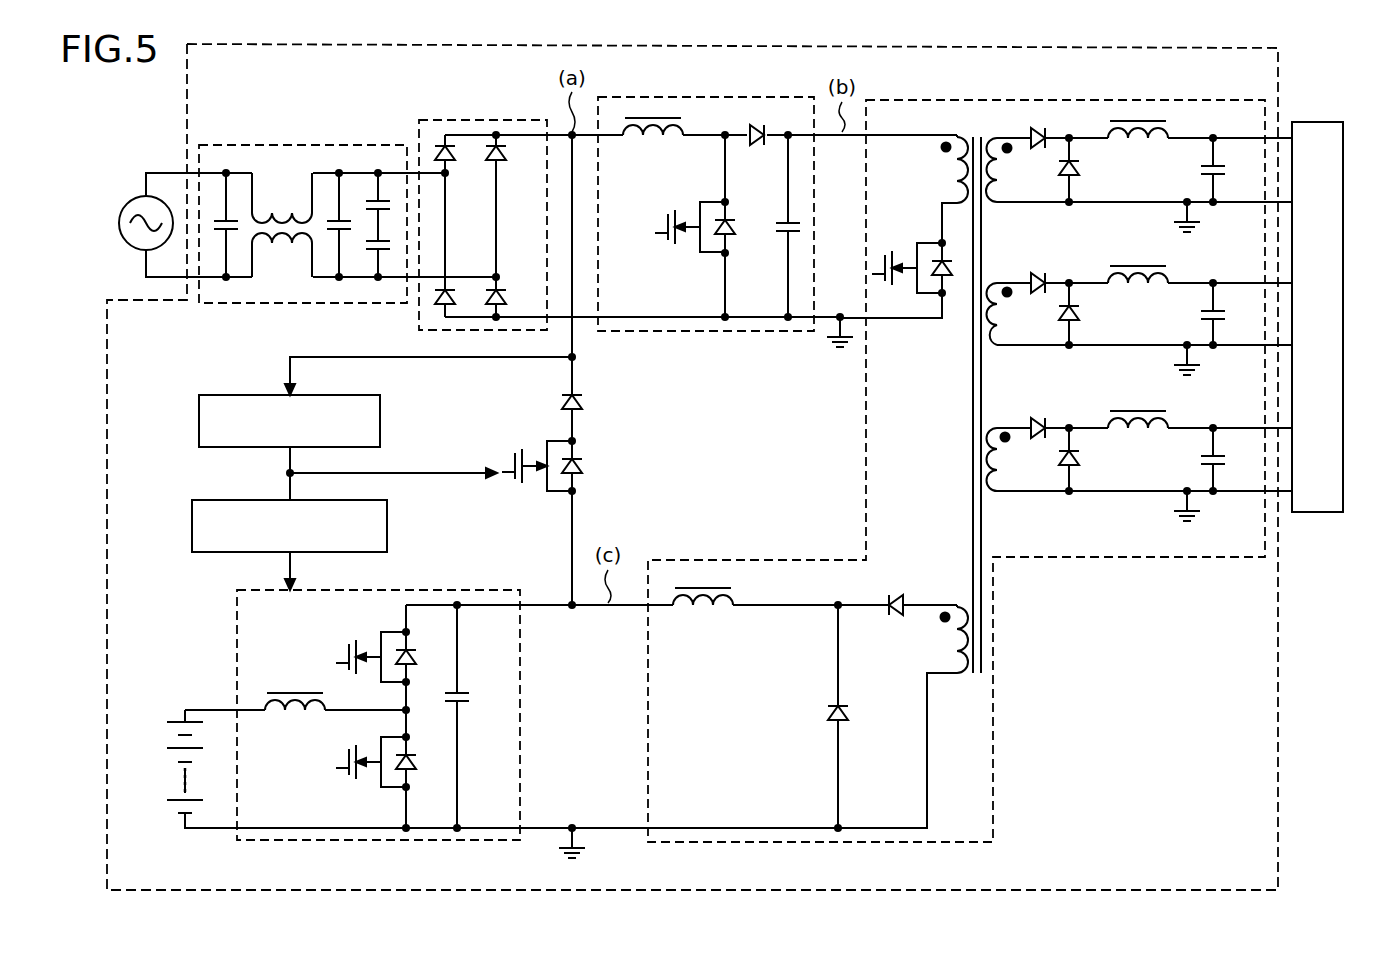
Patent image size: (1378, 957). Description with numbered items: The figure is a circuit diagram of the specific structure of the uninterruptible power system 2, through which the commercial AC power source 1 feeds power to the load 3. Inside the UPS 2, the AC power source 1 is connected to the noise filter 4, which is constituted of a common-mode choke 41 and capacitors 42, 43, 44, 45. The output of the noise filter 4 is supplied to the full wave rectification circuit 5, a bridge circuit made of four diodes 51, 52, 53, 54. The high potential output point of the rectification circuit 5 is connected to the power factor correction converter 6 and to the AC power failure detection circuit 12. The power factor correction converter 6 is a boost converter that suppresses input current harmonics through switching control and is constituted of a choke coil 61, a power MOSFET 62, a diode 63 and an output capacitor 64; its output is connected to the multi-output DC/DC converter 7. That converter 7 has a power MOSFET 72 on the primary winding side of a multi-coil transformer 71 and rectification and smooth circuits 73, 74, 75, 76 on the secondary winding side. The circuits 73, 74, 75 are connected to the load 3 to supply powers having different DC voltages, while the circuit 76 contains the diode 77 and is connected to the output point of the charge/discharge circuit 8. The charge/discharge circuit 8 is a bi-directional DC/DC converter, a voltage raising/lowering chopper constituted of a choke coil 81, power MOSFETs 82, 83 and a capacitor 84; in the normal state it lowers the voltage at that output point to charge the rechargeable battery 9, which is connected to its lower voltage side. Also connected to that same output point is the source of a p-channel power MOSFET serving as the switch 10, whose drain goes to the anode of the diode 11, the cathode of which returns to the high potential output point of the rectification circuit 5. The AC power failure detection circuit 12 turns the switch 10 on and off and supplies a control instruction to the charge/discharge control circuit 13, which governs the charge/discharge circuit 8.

The commercial AC power source 1 is at (119, 223).
The uninterruptible power system (UPS) 2 is at (1280, 58).
The load 3 is at (1318, 512).
The noise filter 4 is at (237, 144).
The full wave rectification circuit 5 is at (502, 119).
The power factor correction converter 6 is at (706, 331).
The multi-output DC/DC converter 7 is at (1130, 557).
The charge/discharge circuit 8 is at (235, 612).
The rechargeable battery 9 is at (170, 814).
The switch 10 is at (514, 451).
The diode 11 is at (588, 405).
The AC power failure detection circuit 12 is at (199, 420).
The charge/discharge control circuit 13 is at (192, 525).
The common-mode choke 41 is at (280, 208).
The capacitor 42 is at (208, 240).
The capacitor 43 is at (325, 215).
The capacitor 44 is at (387, 197).
The capacitor 45 is at (363, 252).
The diode 51 is at (456, 166).
The diode 52 is at (506, 166).
The diode 53 is at (452, 286).
The diode 54 is at (502, 286).
The choke coil 61 is at (655, 147).
The power MOSFET 62 is at (679, 255).
The diode 63 is at (757, 122).
The output capacitor 64 is at (777, 243).
The multi-coil transformer 71 is at (973, 130).
The power MOSFET 72 is at (898, 240).
The rectification and smooth circuit 73 is at (1140, 144).
The rectification and smooth circuit 74 is at (1140, 288).
The rectification and smooth circuit 75 is at (1138, 434).
The rectification and smooth circuit 76 is at (830, 713).
The diode 77 is at (898, 586).
The choke coil 81 is at (295, 718).
The power MOSFET 82 is at (346, 643).
The power MOSFET 83 is at (346, 776).
The capacitor 84 is at (468, 706).